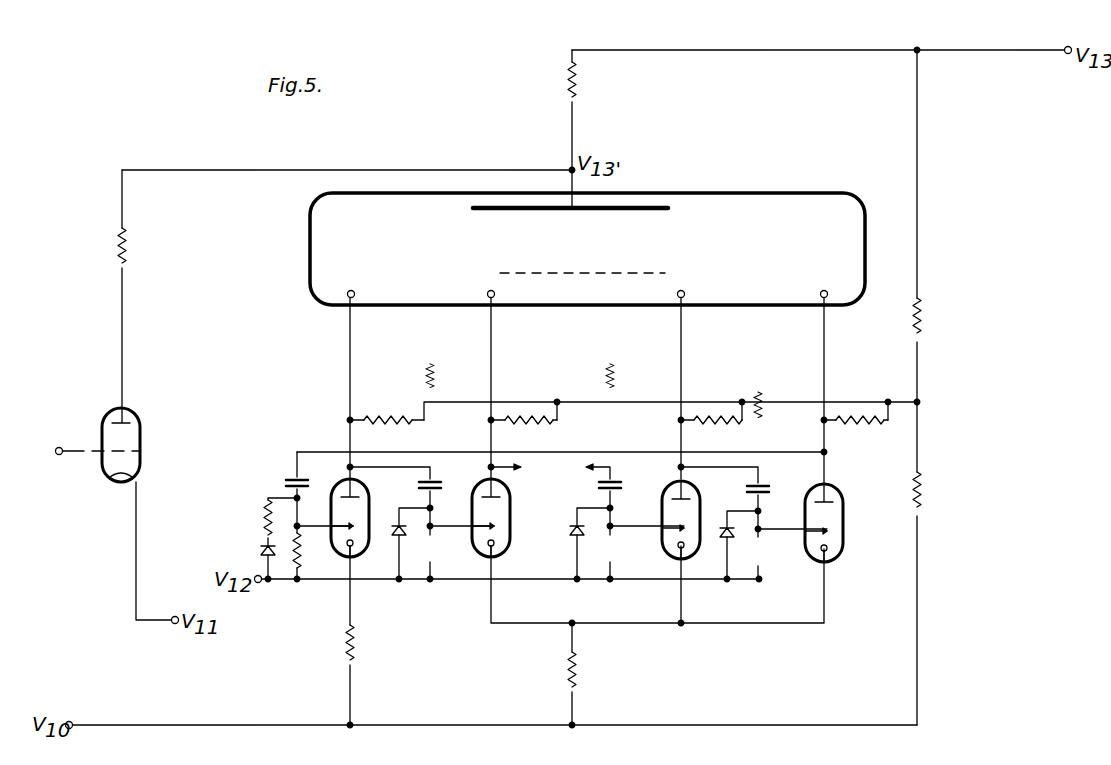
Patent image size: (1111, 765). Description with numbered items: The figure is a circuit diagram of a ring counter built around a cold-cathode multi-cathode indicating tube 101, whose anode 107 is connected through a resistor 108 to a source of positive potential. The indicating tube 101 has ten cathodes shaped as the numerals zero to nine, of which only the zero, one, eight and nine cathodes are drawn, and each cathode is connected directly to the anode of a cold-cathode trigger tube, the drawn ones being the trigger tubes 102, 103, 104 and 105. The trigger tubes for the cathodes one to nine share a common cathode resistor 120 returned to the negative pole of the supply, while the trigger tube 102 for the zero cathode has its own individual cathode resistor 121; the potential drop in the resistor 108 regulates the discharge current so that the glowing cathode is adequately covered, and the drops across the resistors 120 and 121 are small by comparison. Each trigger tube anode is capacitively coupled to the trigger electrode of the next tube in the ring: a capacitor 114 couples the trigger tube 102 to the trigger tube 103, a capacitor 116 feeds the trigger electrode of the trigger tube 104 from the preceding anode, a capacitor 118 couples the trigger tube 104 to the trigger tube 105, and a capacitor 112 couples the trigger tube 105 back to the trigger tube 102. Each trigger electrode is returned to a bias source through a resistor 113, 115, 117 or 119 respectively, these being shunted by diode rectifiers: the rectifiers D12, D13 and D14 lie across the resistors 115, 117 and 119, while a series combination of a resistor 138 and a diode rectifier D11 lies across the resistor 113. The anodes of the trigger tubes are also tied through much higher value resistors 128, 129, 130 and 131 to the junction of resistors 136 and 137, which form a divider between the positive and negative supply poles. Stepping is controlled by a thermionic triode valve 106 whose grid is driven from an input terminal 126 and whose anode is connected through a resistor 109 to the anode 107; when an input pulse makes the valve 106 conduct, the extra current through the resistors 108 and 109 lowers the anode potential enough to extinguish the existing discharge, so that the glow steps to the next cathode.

The cold-cathode multi-cathode indicating tube 101 is at (310, 239).
The trigger tube 102 is at (368, 507).
The trigger tube 103 is at (510, 505).
The trigger tube 104 is at (700, 508).
The trigger tube 105 is at (843, 516).
The thermionic triode valve 106 is at (140, 437).
The anode of the indicating tube 107 is at (570, 223).
The resistor 108 is at (550, 79).
The resistor 109 is at (102, 245).
The capacitor 112 is at (289, 477).
The resistor 113 is at (316, 550).
The capacitor 114 is at (431, 484).
The resistor 115 is at (450, 462).
The capacitor 116 is at (619, 485).
The resistor 117 is at (628, 462).
The capacitor 118 is at (765, 492).
The resistor 119 is at (768, 537).
The common cathode resistor 120 is at (594, 669).
The individual cathode resistor 121 is at (370, 642).
The terminal 126 is at (88, 438).
The resistor 128 is at (385, 434).
The resistor 129 is at (522, 434).
The resistor 130 is at (736, 428).
The resistor 131 is at (876, 430).
The resistor 136 is at (940, 489).
The resistor 137 is at (921, 304).
The resistor 138 is at (263, 515).
The diode rectifier D11 is at (248, 551).
The diode rectifier D12 is at (386, 548).
The diode rectifier D13 is at (557, 535).
The diode rectifier D14 is at (713, 554).